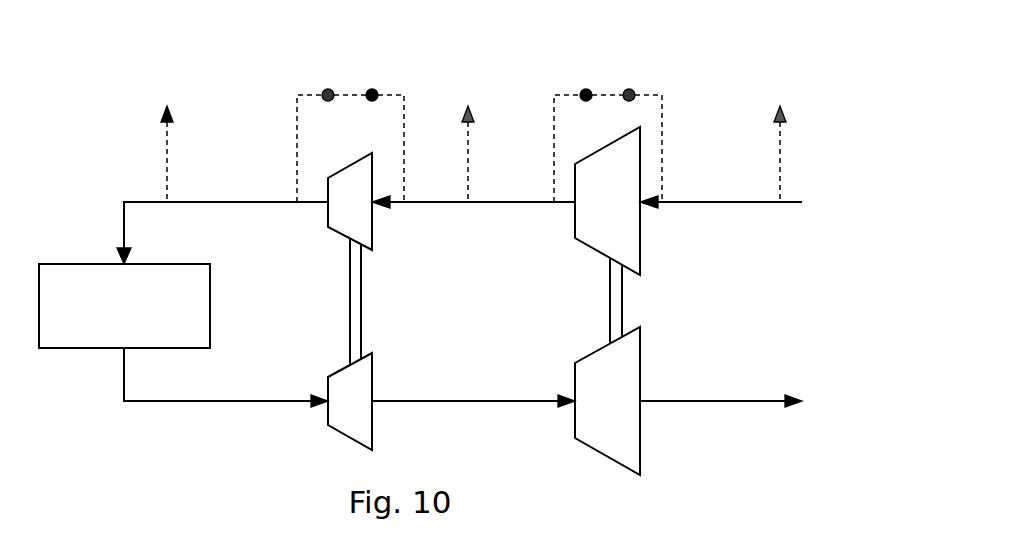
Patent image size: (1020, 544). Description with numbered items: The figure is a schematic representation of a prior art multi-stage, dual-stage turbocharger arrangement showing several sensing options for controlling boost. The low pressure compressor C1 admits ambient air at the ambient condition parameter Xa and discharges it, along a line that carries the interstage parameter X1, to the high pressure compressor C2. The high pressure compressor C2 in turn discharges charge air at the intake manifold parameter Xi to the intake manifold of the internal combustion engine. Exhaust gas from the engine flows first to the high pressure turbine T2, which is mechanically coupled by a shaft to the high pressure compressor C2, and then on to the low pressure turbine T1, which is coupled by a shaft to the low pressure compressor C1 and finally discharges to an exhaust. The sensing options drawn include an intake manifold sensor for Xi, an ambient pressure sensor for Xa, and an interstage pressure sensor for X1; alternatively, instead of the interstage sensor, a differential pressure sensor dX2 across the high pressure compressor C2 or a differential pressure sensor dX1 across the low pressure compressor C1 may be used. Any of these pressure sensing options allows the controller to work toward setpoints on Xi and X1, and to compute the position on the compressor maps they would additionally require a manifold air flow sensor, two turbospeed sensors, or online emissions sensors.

The low pressure compressor C1 is at (607, 201).
The high pressure compressor C2 is at (350, 201).
The low pressure turbine T1 is at (607, 401).
The high pressure turbine T2 is at (350, 401).
The internal combustion engine is at (124, 306).
The intake manifold parameter Xi is at (179, 154).
The interstage parameter X1 is at (482, 154).
The ambient condition parameter Xa is at (794, 154).
The differential pressure sensor across C1 dX1 is at (608, 128).
The differential pressure sensor across C2 dX2 is at (350, 128).